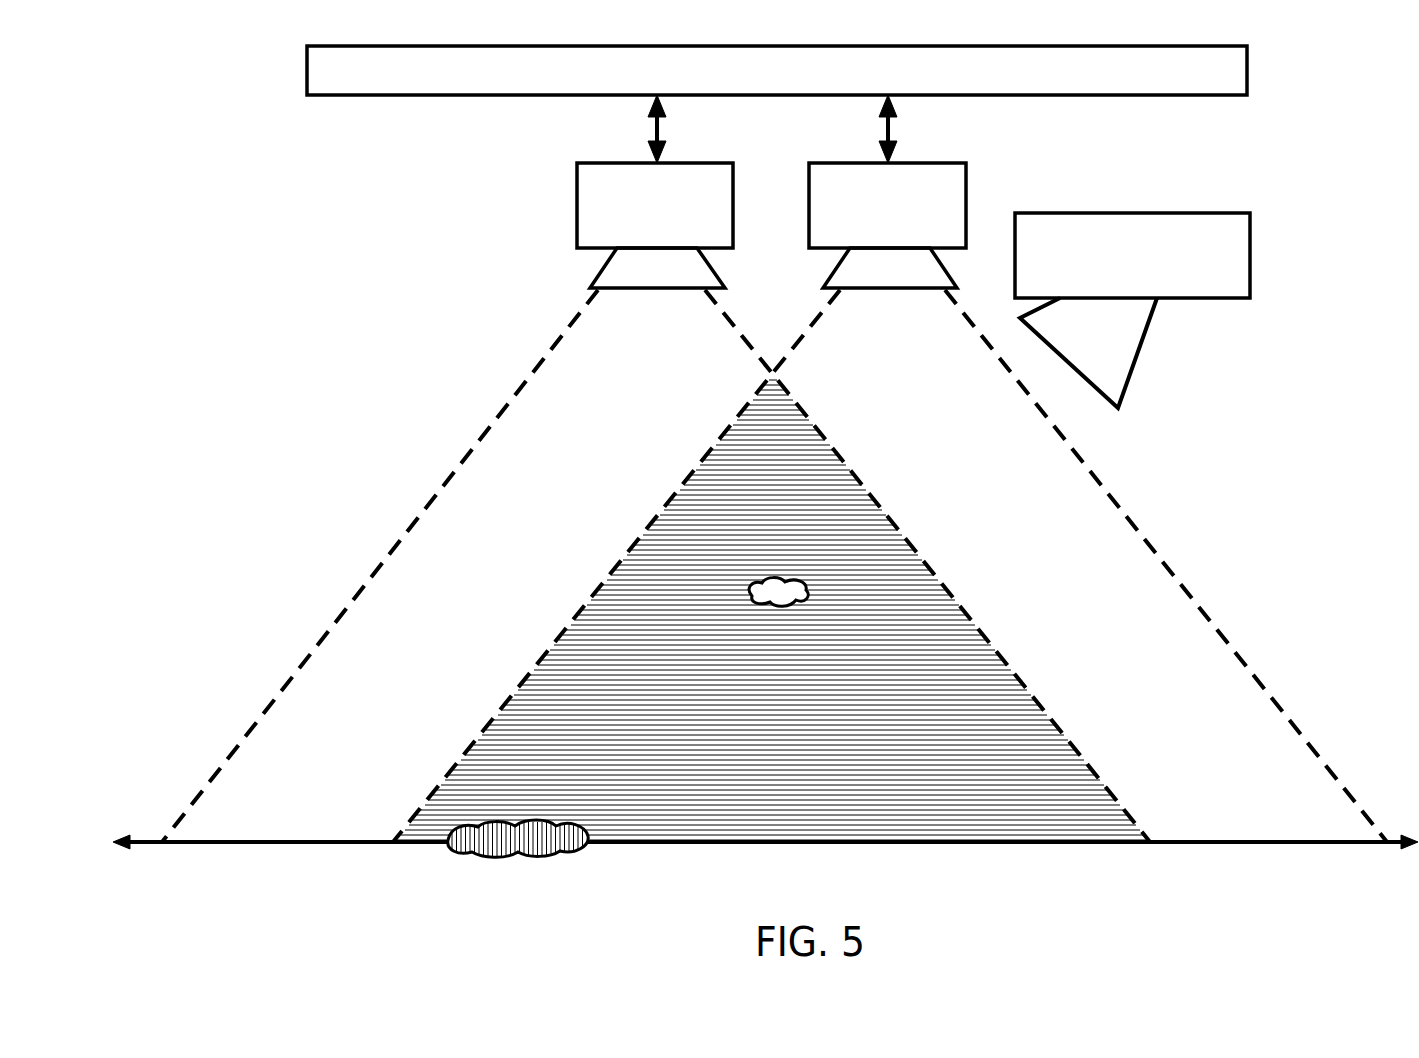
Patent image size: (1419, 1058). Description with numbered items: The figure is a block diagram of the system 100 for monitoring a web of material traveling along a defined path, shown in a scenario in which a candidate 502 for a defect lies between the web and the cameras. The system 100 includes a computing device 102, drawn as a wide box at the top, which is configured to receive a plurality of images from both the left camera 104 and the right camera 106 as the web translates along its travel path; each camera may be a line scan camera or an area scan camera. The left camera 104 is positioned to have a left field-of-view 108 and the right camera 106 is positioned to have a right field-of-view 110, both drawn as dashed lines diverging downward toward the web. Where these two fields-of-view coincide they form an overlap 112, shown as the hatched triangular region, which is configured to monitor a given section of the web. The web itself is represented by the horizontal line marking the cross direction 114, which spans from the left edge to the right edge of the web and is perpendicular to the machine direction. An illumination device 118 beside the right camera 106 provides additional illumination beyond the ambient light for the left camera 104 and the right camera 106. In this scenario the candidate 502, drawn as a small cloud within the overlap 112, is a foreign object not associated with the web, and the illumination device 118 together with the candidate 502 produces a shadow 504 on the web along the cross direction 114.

The system 100 is at (202, 230).
The computing device 102 is at (1247, 68).
The left camera 104 is at (577, 205).
The right camera 106 is at (966, 195).
The left field-of-view 108 is at (505, 420).
The right field-of-view 110 is at (1060, 440).
The overlap 112 is at (965, 800).
The cross direction 114 is at (235, 842).
The illumination device 118 is at (1250, 250).
The candidate 502 is at (778, 604).
The shadow 504 is at (521, 856).